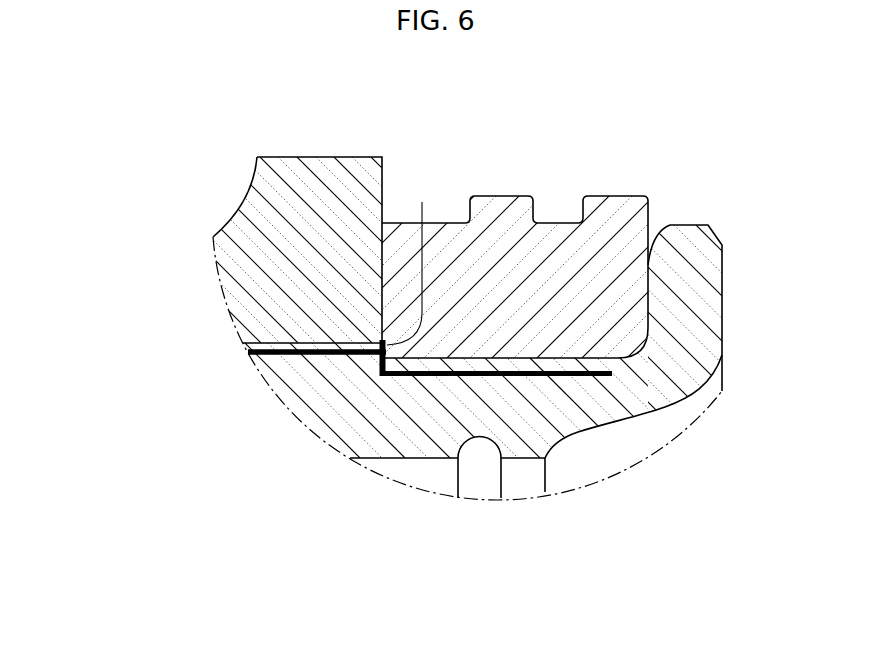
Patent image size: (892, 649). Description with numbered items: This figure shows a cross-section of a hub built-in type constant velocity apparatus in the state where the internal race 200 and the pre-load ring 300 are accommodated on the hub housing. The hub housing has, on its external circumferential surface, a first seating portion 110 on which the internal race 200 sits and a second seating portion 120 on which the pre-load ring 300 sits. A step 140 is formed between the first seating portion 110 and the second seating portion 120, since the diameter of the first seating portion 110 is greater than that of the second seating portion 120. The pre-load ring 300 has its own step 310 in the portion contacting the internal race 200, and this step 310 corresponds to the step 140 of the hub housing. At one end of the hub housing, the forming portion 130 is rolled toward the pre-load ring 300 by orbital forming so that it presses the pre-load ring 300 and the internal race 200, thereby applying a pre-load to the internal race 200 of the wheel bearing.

The first seating portion 110 is at (298, 352).
The second seating portion 120 is at (568, 374).
The forming portion 130 is at (693, 256).
The step 140 is at (378, 377).
The internal race 200 is at (244, 198).
The pre-load ring 300 is at (500, 242).
The step 310 is at (423, 203).